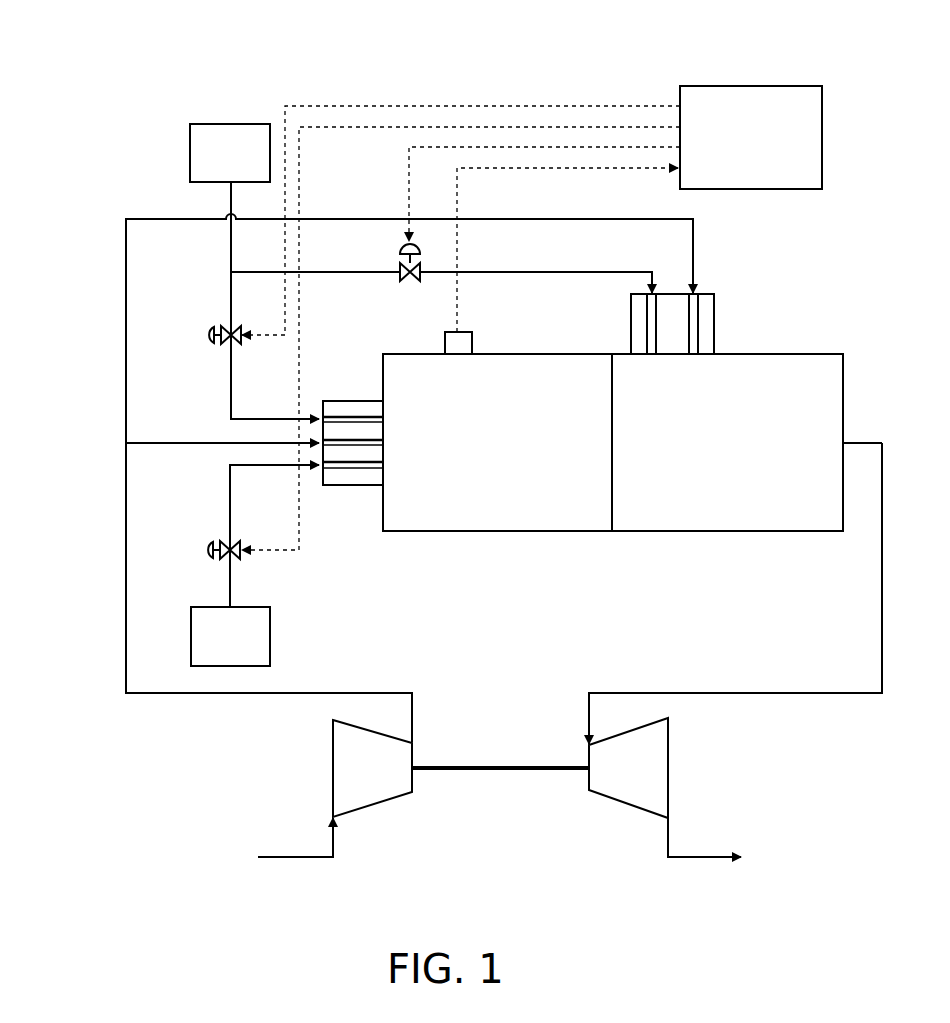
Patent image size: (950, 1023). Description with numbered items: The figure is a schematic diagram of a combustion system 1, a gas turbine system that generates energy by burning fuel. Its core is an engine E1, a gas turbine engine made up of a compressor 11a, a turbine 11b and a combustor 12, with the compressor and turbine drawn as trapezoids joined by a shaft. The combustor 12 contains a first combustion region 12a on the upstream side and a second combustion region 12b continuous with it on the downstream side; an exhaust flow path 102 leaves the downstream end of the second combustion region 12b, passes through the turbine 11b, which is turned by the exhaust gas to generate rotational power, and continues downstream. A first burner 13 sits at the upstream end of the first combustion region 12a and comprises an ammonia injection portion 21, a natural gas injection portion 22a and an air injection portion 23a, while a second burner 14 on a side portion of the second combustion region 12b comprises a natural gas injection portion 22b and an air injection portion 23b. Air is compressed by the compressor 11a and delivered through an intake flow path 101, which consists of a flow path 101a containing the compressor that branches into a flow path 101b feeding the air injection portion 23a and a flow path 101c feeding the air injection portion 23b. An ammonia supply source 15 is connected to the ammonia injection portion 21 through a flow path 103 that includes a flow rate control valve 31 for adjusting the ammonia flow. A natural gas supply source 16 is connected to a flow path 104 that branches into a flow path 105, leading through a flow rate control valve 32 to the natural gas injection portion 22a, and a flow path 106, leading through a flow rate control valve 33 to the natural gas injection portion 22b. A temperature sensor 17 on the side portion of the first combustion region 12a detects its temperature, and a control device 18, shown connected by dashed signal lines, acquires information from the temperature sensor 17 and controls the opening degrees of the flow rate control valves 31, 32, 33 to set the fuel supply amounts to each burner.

The combustion system 1 is at (60, 99).
The compressor 11a is at (332, 767).
The turbine 11b is at (669, 767).
The combustor 12 is at (632, 467).
The first combustion region 12a is at (528, 532).
The second combustion region 12b is at (667, 522).
The first burner 13 is at (351, 486).
The second burner 14 is at (710, 294).
The ammonia supply source 15 is at (271, 635).
The natural gas supply source 16 is at (229, 123).
The temperature sensor 17 is at (468, 331).
The control device 18 is at (748, 85).
The ammonia injection portion 21 is at (385, 470).
The natural gas injection portion 22a is at (385, 420).
The natural gas injection portion 22b is at (645, 362).
The air injection portion 23a is at (385, 444).
The air injection portion 23b is at (700, 364).
The flow rate control valve 31 is at (235, 560).
The flow rate control valve 32 is at (236, 345).
The flow rate control valve 33 is at (405, 282).
The intake flow path 101 is at (85, 520).
The flow path 101a is at (125, 590).
The flow path 101b is at (168, 442).
The flow path 101c is at (125, 355).
The exhaust flow path 102 is at (881, 597).
The flow path 103 is at (229, 508).
The flow path 104 is at (230, 201).
The flow path 105 is at (230, 294).
The flow path 106 is at (338, 271).
The engine E1 is at (501, 828).